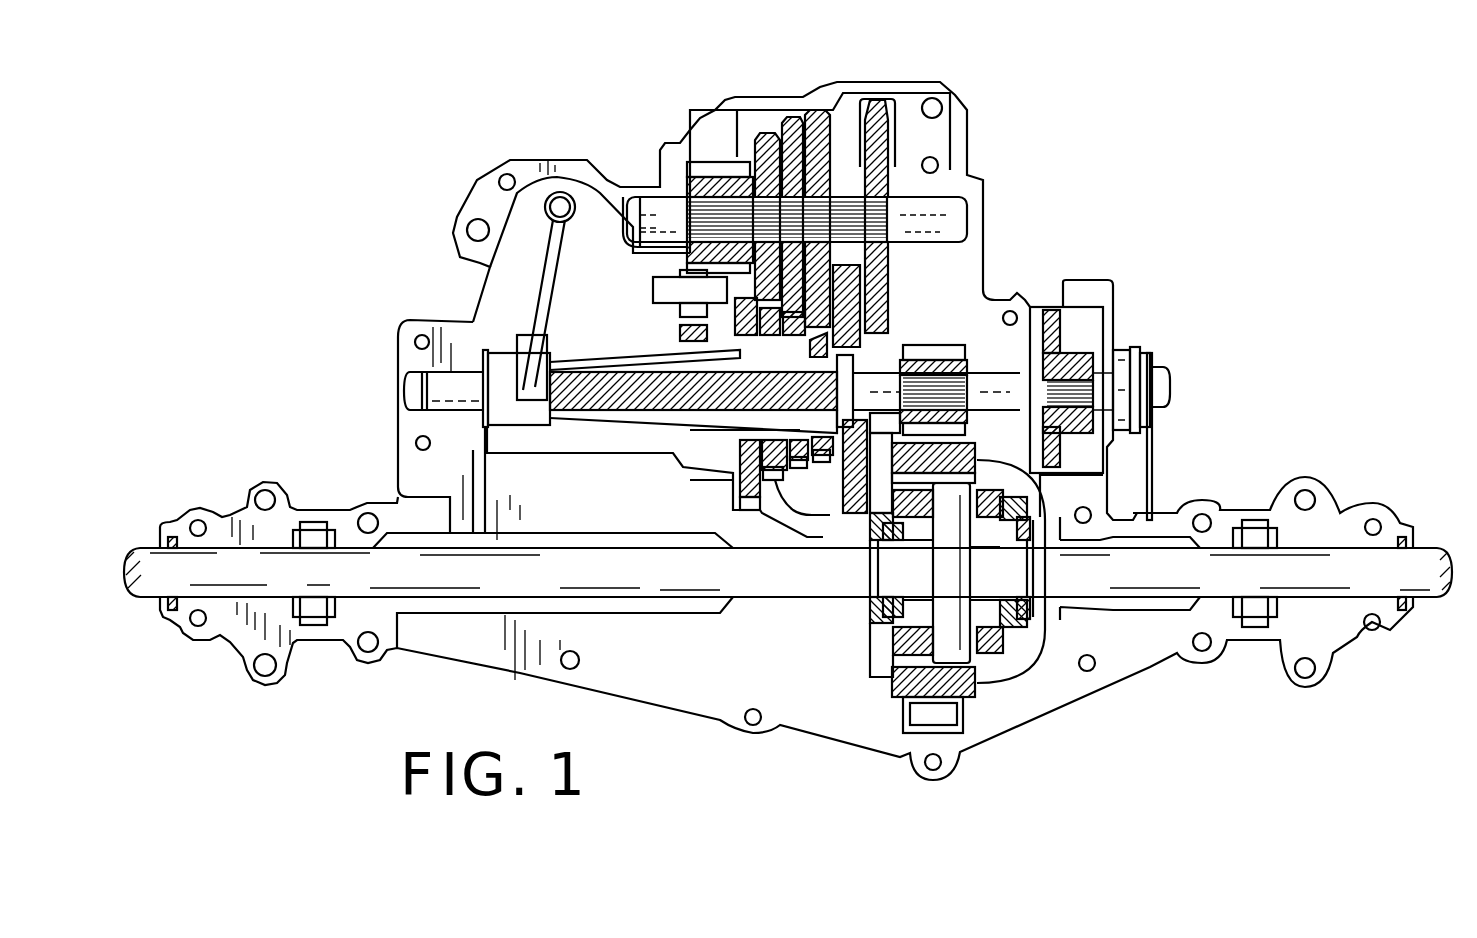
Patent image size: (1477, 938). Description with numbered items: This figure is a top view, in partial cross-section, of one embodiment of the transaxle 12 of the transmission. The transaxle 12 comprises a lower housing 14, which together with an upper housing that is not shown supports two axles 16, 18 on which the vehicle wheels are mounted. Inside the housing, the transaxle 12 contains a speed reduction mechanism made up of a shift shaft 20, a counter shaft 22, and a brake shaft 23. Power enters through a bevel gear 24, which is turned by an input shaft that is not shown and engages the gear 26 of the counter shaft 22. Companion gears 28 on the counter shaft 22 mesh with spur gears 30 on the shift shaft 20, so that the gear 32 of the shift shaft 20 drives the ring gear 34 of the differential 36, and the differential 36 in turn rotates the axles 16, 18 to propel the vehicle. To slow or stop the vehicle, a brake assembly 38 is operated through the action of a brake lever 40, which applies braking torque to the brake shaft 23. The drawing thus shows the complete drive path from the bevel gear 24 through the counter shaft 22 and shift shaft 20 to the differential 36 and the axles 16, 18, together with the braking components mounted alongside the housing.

The transaxle 12 is at (1130, 282).
The lower housing 14 is at (975, 262).
The axle 16 is at (1440, 548).
The axle 18 is at (148, 547).
The shift shaft 20 is at (868, 350).
The counter shaft 22 is at (940, 207).
The brake shaft 23 is at (1007, 380).
The bevel gear 24 is at (905, 272).
The gear 26 is at (878, 98).
The companion gears 28 is at (813, 117).
The spur gears 30 is at (817, 477).
The gear 32 is at (937, 360).
The ring gear 34 is at (960, 458).
The differential 36 is at (1020, 685).
The brake assembly 38 is at (1170, 372).
The brake lever 40 is at (1155, 457).